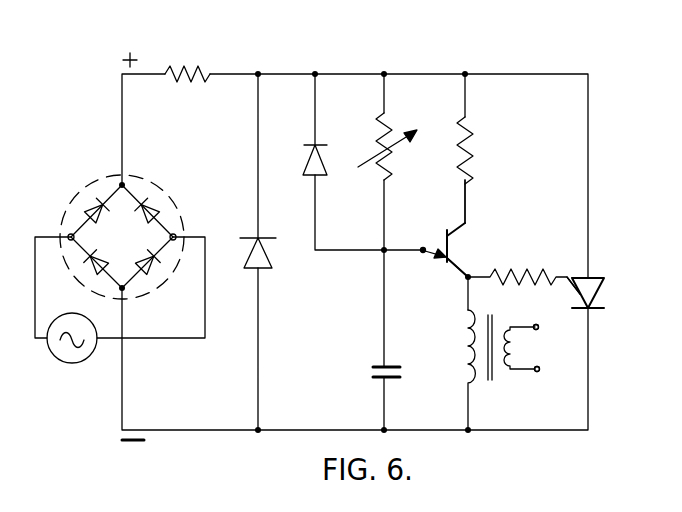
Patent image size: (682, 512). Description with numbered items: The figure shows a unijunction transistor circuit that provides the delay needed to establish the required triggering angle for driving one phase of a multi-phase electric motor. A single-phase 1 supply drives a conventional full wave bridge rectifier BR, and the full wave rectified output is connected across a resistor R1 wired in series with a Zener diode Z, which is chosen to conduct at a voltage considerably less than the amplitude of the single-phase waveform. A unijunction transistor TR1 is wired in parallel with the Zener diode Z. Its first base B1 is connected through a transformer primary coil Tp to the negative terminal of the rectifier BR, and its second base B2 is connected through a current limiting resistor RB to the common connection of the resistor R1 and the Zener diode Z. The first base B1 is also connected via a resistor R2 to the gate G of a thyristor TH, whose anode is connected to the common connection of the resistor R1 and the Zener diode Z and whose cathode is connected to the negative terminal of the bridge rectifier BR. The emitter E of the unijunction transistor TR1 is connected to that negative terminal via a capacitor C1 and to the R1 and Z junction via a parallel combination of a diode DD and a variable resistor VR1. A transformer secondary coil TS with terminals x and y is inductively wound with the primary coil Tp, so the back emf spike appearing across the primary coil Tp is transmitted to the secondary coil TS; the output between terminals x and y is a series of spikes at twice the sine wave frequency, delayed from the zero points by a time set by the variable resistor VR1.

The resistor R1 is at (170, 70).
The full wave bridge rectifier BR is at (86, 186).
The single-phase 1 is at (50, 405).
The Zener diode Z is at (265, 268).
The diode DD is at (308, 158).
The variable resistor VR1 is at (395, 135).
The capacitor C1 is at (378, 378).
The current limiting resistor RB is at (468, 120).
The unijunction transistor TR1 is at (453, 233).
The second base B2 is at (468, 200).
The emitter E is at (405, 249).
The first base B1 is at (466, 277).
The resistor R2 is at (512, 272).
The thyristor TH is at (596, 289).
The gate G is at (566, 289).
The transformer primary coil Tp is at (465, 340).
The transformer secondary coil TS is at (504, 372).
The terminal x is at (545, 330).
The terminal y is at (547, 370).